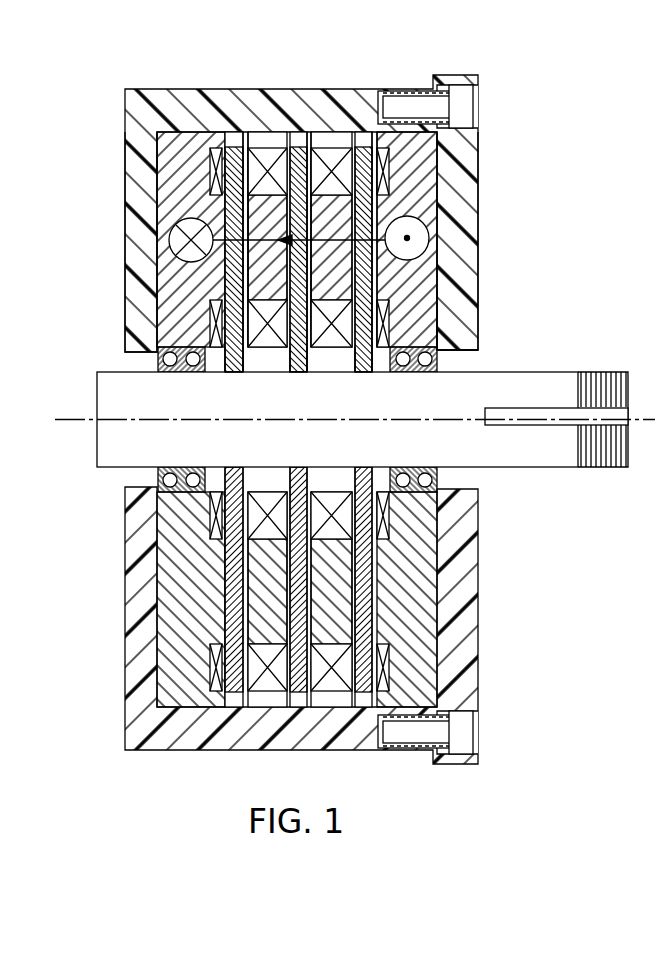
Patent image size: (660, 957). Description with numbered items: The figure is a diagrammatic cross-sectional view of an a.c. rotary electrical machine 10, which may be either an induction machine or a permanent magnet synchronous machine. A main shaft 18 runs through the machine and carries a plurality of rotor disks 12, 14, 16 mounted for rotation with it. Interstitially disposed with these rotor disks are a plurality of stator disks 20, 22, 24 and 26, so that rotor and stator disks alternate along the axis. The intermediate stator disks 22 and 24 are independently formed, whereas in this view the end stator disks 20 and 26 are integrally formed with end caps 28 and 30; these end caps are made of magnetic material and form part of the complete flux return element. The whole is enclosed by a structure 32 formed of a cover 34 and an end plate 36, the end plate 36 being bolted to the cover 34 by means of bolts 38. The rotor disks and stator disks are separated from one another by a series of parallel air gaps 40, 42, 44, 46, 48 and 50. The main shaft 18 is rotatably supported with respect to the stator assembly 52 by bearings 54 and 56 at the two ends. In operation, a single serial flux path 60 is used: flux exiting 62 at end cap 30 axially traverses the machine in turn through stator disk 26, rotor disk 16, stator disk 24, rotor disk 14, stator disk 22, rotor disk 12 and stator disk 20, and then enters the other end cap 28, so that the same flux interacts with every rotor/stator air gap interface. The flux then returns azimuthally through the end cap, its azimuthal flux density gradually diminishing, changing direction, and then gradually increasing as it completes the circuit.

The a.c. rotary electrical machine 10 is at (96, 44).
The rotor disk 12 is at (236, 148).
The rotor disk 14 is at (297, 147).
The rotor disk 16 is at (360, 147).
The main shaft 18 is at (565, 385).
The stator disk 20 is at (216, 148).
The stator disk 22 is at (267, 147).
The stator disk 24 is at (331, 147).
The stator disk 26 is at (378, 103).
The end cap 28 is at (148, 197).
The end cap 30 is at (450, 181).
The structure 32 is at (160, 86).
The cover 34 is at (125, 155).
The end plate 36 is at (478, 270).
The bolt 38 is at (478, 108).
The air gap 40 is at (226, 348).
The air gap 42 is at (247, 345).
The air gap 44 is at (308, 345).
The air gap 46 is at (312, 345).
The air gap 48 is at (357, 345).
The air gap 50 is at (377, 345).
The stator assembly 52 is at (449, 304).
The bearing 54 is at (155, 370).
The bearing 56 is at (440, 362).
The flux path 60 is at (190, 262).
The flux exiting 62 is at (430, 230).